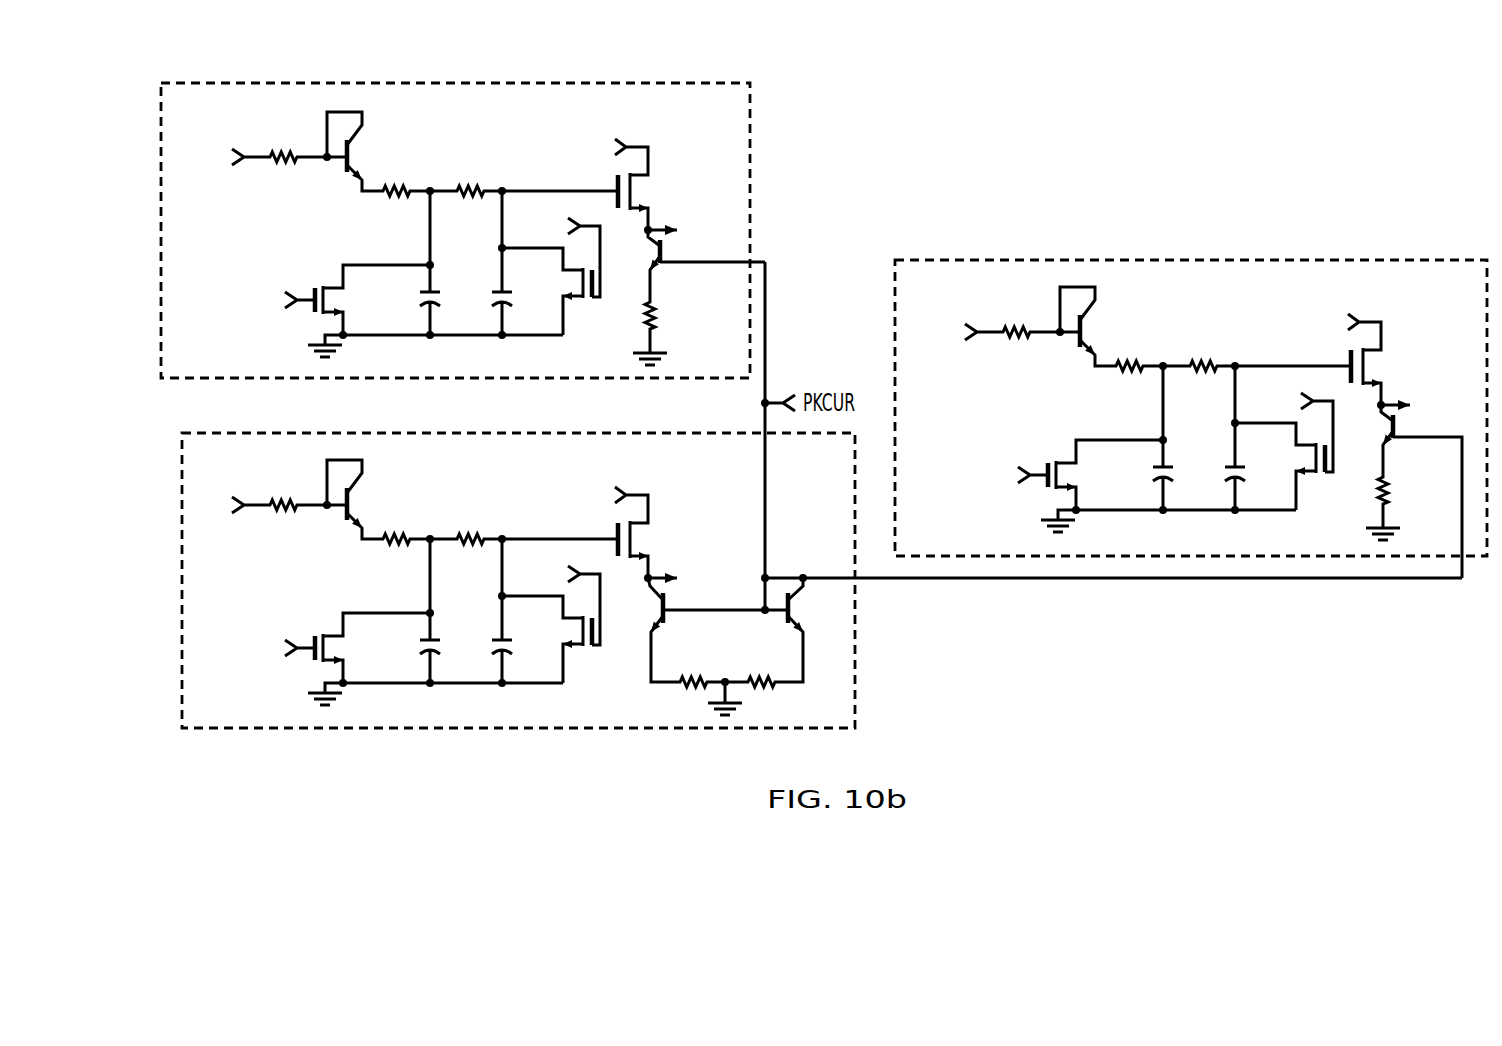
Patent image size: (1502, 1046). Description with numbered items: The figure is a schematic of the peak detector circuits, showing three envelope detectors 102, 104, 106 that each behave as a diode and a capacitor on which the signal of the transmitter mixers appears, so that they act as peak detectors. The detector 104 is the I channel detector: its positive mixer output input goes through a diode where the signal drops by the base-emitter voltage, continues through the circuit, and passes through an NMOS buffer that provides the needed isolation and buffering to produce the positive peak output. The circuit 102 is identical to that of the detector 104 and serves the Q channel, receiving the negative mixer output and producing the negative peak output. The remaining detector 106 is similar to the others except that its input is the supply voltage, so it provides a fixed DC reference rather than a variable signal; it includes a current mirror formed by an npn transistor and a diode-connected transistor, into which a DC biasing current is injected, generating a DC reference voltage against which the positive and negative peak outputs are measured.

The envelope detector 102 is at (1423, 259).
The envelope detector 104 is at (661, 82).
The envelope detector 106 is at (856, 671).